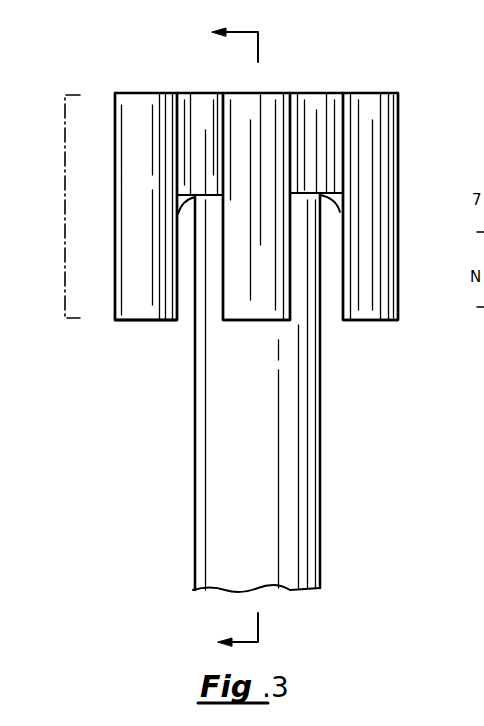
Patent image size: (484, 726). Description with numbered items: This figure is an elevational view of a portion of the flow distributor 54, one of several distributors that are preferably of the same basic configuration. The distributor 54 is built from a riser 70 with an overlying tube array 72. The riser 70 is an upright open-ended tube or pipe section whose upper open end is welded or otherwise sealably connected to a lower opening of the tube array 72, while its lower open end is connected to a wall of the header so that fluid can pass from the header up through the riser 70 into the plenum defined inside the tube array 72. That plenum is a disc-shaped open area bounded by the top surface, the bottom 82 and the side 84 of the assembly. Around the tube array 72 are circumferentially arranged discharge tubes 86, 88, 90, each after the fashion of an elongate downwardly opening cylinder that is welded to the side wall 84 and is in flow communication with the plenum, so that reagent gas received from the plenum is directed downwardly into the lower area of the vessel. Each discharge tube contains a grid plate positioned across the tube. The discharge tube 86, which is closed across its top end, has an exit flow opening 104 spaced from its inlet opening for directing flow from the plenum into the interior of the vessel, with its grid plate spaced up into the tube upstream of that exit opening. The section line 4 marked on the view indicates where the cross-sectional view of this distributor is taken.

The section line 4- 4 is at (224, 339).
The distributor 54 is at (370, 68).
The riser 70 is at (290, 378).
The tube array 72 is at (65, 198).
The bottom 82 is at (184, 202).
The side 84 is at (203, 97).
The discharge tube 86 is at (126, 153).
The discharge tube 88 is at (262, 100).
The discharge tube 90 is at (377, 143).
The exit flow opening 104 is at (137, 324).